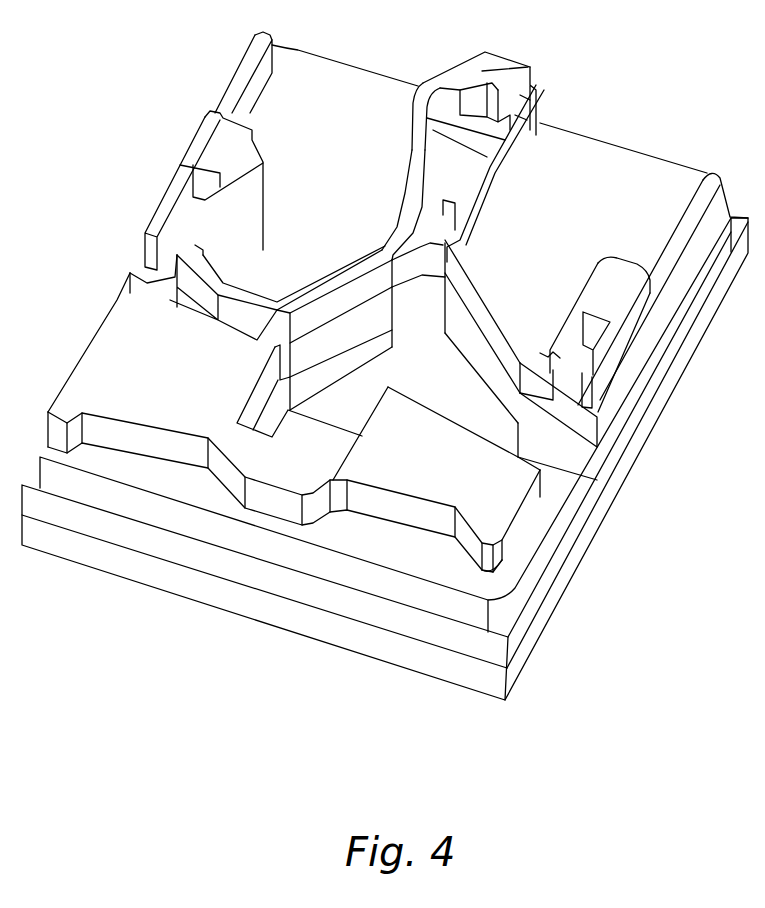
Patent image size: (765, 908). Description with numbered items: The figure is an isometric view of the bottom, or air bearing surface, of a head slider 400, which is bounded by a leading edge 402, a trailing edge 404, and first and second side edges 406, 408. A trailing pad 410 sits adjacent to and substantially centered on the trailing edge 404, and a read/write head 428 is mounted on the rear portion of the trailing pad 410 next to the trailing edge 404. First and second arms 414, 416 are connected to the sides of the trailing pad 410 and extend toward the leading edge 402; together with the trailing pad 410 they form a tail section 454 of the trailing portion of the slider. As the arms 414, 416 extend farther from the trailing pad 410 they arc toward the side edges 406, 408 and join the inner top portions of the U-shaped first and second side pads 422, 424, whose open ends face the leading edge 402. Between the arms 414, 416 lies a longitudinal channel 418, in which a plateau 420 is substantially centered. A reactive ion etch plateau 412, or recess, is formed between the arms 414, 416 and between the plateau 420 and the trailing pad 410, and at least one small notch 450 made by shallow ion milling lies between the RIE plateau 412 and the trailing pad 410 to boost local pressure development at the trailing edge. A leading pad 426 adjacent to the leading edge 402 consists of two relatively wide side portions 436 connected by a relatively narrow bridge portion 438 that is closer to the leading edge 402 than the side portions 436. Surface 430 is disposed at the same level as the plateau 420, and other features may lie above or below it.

The head slider 400 is at (113, 92).
The leading edge 402 is at (148, 620).
The trailing edge 404 is at (625, 125).
The first side edge 406 is at (115, 288).
The second side edge 408 is at (622, 535).
The trailing pad 410 is at (508, 68).
The reactive ion etch (RIE) plateau 412 is at (453, 132).
The first arm 414 is at (412, 158).
The second arm 416 is at (487, 167).
The longitudinal channel 418 is at (428, 303).
The plateau 420 is at (448, 212).
The first side pad 422 is at (205, 135).
The second side pad 424 is at (622, 263).
The leading pad 426 is at (92, 353).
The read/write head 428 is at (528, 103).
The surface 430 is at (326, 190).
The side portions 436 is at (184, 372).
The bridge portion 438 is at (293, 467).
The notch 450 is at (483, 120).
The tail section 454 is at (523, 118).